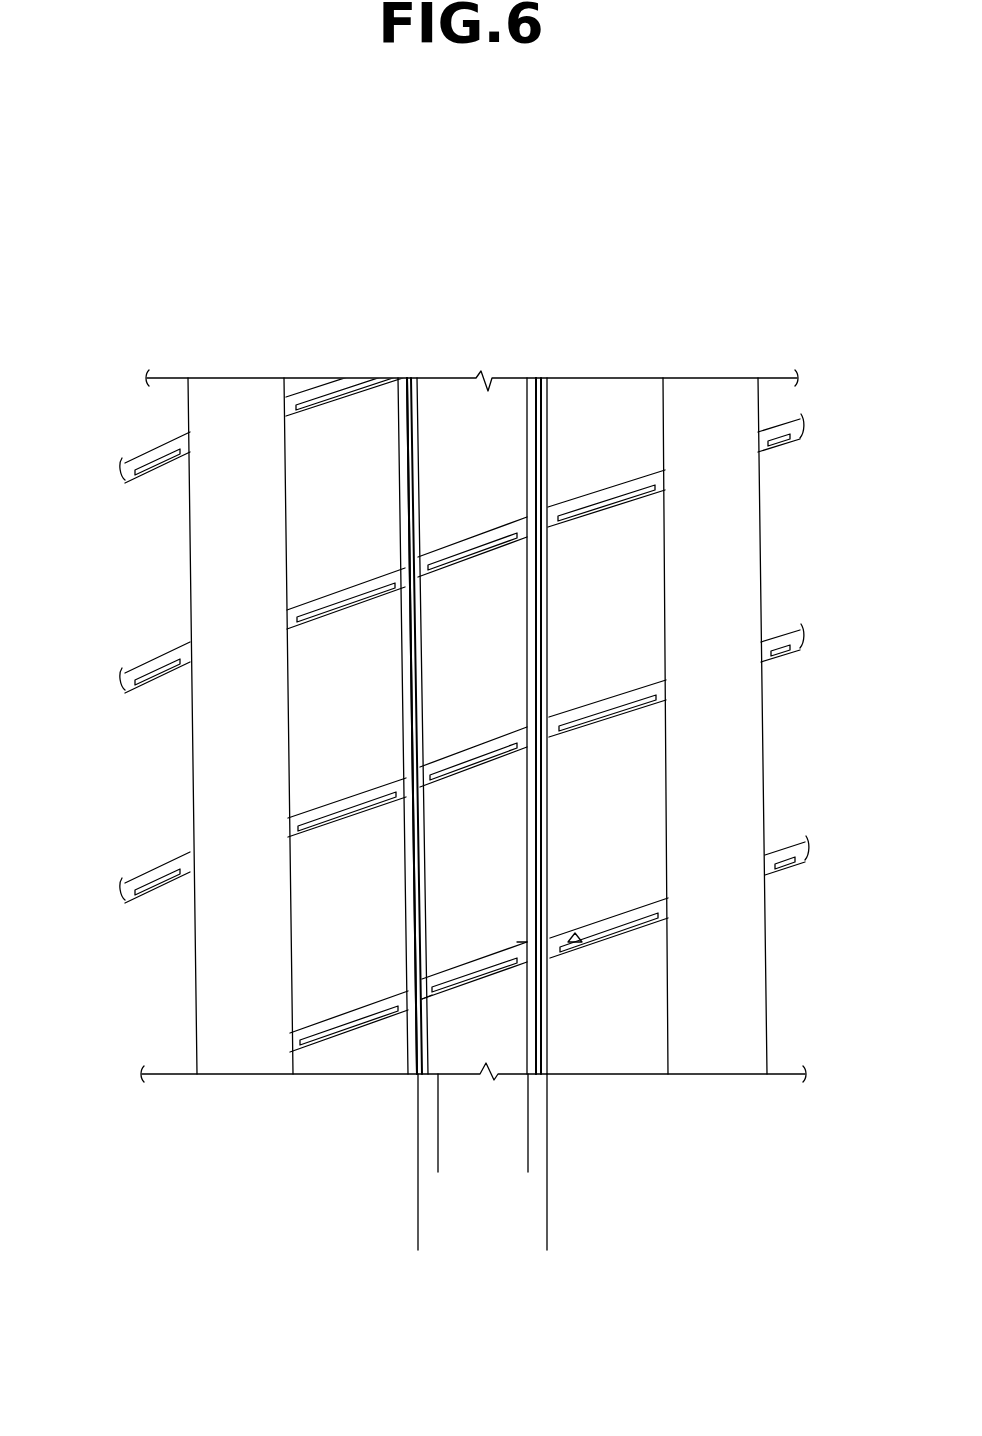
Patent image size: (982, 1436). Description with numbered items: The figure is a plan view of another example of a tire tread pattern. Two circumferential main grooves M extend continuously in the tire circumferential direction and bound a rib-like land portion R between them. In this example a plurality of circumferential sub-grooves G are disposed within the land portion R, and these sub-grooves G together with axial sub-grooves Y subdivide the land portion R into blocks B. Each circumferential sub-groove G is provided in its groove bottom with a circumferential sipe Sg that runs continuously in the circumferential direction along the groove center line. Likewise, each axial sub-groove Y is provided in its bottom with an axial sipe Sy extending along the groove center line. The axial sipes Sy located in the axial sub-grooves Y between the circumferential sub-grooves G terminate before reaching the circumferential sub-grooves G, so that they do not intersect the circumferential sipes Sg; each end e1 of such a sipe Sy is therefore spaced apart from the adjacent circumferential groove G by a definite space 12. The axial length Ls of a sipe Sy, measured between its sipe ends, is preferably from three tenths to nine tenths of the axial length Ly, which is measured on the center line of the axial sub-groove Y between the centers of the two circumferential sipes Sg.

The circumferential main groove M is at (213, 408).
The rib-like land portion R is at (285, 276).
The circumferential sub-groove G is at (418, 455).
The circumferential sipe Sg is at (405, 487).
The block B is at (371, 705).
The space 12 is at (438, 976).
The axial sipe Sy is at (479, 973).
The end of axial sipe e1 is at (440, 1009).
The axial sub-groove Y is at (580, 942).
The axial length of sipe Ls is at (438, 1167).
The axial length of axial sub-groove Ly is at (418, 1244).